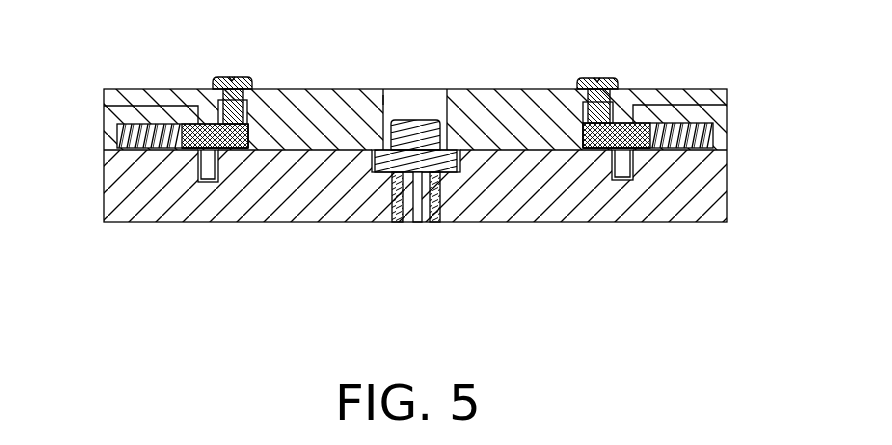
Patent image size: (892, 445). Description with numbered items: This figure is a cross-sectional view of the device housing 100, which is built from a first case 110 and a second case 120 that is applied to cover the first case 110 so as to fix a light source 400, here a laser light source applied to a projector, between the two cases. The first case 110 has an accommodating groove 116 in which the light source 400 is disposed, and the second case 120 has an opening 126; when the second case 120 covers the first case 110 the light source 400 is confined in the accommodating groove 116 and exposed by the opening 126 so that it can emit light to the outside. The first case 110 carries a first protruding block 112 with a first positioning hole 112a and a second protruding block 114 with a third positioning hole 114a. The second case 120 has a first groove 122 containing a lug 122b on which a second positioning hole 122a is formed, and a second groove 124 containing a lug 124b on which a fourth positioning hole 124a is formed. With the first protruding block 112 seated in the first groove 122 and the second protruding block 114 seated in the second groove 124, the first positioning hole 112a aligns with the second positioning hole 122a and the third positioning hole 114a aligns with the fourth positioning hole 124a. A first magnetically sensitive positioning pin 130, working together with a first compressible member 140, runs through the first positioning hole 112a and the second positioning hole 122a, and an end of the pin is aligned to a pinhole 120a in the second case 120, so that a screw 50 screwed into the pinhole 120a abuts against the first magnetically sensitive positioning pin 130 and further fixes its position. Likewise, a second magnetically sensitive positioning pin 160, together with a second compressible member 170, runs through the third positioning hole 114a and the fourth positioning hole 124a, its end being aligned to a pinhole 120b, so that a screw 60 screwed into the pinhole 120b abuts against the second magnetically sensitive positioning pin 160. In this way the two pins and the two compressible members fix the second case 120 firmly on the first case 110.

The device housing 100 is at (828, 319).
The first case 110 is at (744, 229).
The second case 120 is at (735, 76).
The first protruding block 112 is at (718, 120).
The second protruding block 114 is at (110, 120).
The first positioning hole 112a is at (692, 108).
The third positioning hole 114a is at (150, 127).
The accommodating groove 116 is at (375, 163).
The pinhole 120a is at (592, 77).
The pinhole 120b is at (237, 77).
The first groove 122 is at (655, 120).
The second positioning hole 122a is at (617, 150).
The lug 122b is at (627, 172).
The second groove 124 is at (172, 110).
The fourth positioning hole 124a is at (215, 150).
The lug 124b is at (205, 173).
The opening 126 is at (389, 100).
The first magnetically sensitive positioning pin 130 is at (580, 136).
The first compressible member 140 is at (698, 132).
The second compressible member 170 is at (133, 130).
The second magnetically sensitive positioning pin 160 is at (250, 136).
The screw 50 is at (614, 80).
The screw 60 is at (216, 80).
The light source 400 is at (415, 130).